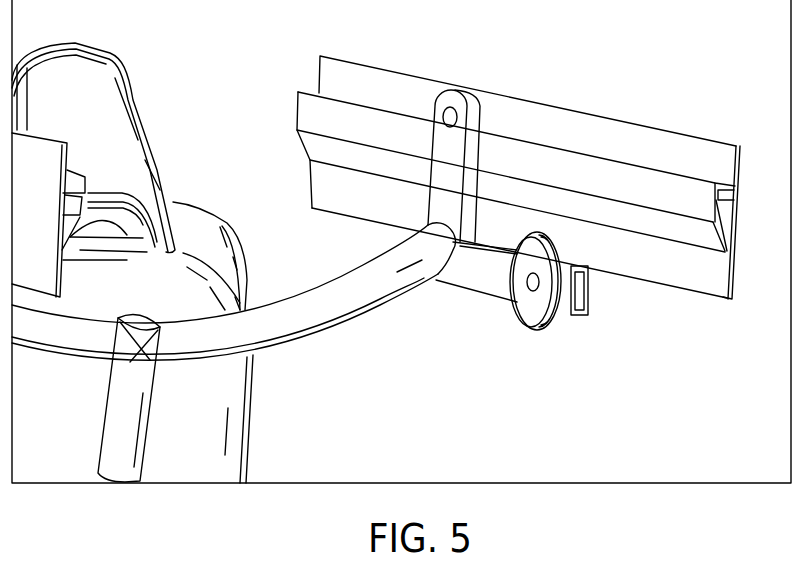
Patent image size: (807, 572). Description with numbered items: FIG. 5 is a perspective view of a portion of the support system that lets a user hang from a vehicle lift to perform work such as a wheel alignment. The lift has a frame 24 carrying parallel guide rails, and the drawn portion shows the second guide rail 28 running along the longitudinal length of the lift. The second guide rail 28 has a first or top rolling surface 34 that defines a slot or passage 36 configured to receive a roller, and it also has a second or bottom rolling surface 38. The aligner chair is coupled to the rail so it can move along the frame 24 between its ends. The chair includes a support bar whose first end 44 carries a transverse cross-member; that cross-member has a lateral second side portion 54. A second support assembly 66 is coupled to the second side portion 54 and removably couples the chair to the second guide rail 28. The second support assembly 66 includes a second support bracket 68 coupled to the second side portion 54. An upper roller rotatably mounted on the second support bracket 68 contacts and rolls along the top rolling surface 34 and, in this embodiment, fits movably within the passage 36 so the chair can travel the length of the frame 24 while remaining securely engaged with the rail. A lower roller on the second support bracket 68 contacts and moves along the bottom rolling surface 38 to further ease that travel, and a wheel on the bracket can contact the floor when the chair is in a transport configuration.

The frame 24 is at (539, 187).
The second guide rail 28 is at (379, 70).
The top rolling surface 34 is at (637, 166).
The passage 36 is at (720, 195).
The bottom rolling surface 38 is at (678, 292).
The first end 44 is at (148, 428).
The second side portion 54 is at (330, 322).
The second support assembly 66 is at (453, 296).
The second support bracket 68 is at (427, 232).